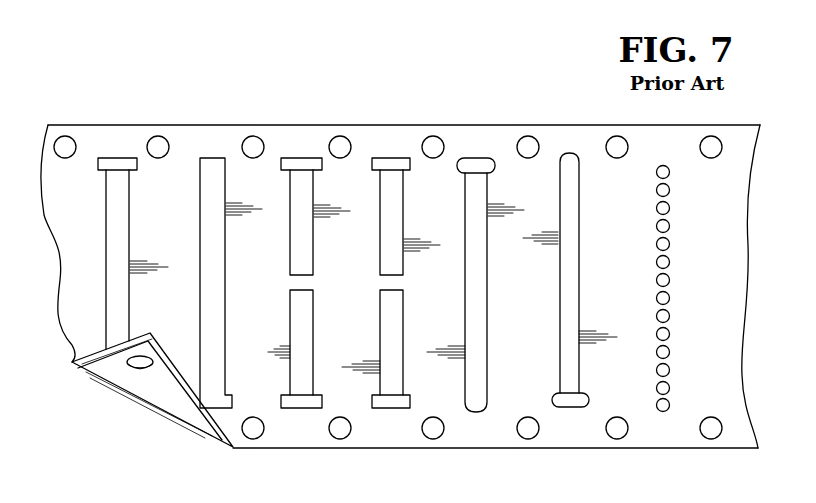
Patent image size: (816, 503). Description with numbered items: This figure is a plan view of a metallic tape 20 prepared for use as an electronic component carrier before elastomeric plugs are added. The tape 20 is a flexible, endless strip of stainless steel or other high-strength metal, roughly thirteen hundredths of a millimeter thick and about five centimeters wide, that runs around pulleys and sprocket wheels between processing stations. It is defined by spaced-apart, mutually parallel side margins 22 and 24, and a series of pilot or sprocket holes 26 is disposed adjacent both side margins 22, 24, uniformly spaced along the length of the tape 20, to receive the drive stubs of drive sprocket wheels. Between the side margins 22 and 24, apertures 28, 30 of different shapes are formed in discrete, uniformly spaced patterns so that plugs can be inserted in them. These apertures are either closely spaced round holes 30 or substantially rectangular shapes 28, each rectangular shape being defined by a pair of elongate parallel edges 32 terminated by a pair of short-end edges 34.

The metallic tape 20 is at (143, 33).
The side margin 22 is at (500, 125).
The side margin 24 is at (665, 448).
The sprocket holes 26 is at (341, 440).
The substantially rectangular apertures 28 is at (128, 185).
The round holes 30 is at (670, 190).
The elongate parallel edges 32 is at (104, 254).
The short-end edges 34 is at (120, 158).